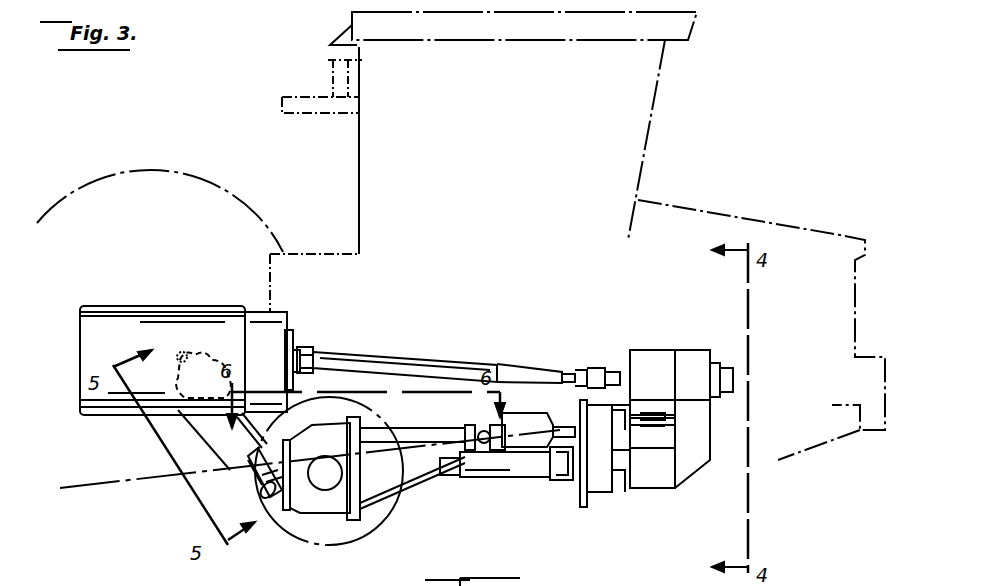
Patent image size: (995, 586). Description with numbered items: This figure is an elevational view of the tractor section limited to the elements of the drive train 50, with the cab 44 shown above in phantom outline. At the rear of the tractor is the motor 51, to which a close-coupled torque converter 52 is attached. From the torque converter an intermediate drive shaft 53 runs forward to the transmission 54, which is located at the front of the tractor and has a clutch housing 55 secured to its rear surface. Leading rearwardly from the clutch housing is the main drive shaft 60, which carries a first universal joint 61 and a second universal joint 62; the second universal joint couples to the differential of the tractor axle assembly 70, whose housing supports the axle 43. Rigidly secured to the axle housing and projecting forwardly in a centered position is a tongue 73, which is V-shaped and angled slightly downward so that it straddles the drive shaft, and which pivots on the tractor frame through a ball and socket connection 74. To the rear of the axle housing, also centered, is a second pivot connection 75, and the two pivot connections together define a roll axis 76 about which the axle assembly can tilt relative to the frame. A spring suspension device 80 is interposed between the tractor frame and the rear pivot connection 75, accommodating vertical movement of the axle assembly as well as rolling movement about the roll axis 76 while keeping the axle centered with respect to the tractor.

The cab 44 is at (650, 125).
The motor 51 is at (157, 306).
The close-coupled torque converter 52 is at (275, 313).
The intermediate drive shaft 53 is at (388, 358).
The drive train 50 is at (355, 330).
The transmission 54 is at (655, 355).
The clutch housing 55 is at (597, 493).
The spring suspension device 80 is at (200, 439).
The second pivot connection 75 is at (240, 479).
The roll axis 76 is at (95, 480).
The tractor axle assembly 70 is at (303, 523).
The axle 43 is at (322, 490).
The tongue 73 is at (412, 428).
The ball and socket connection 74 is at (480, 428).
The main drive shaft 60 is at (465, 478).
The first universal joint 61 is at (555, 470).
The second universal joint 62 is at (405, 488).